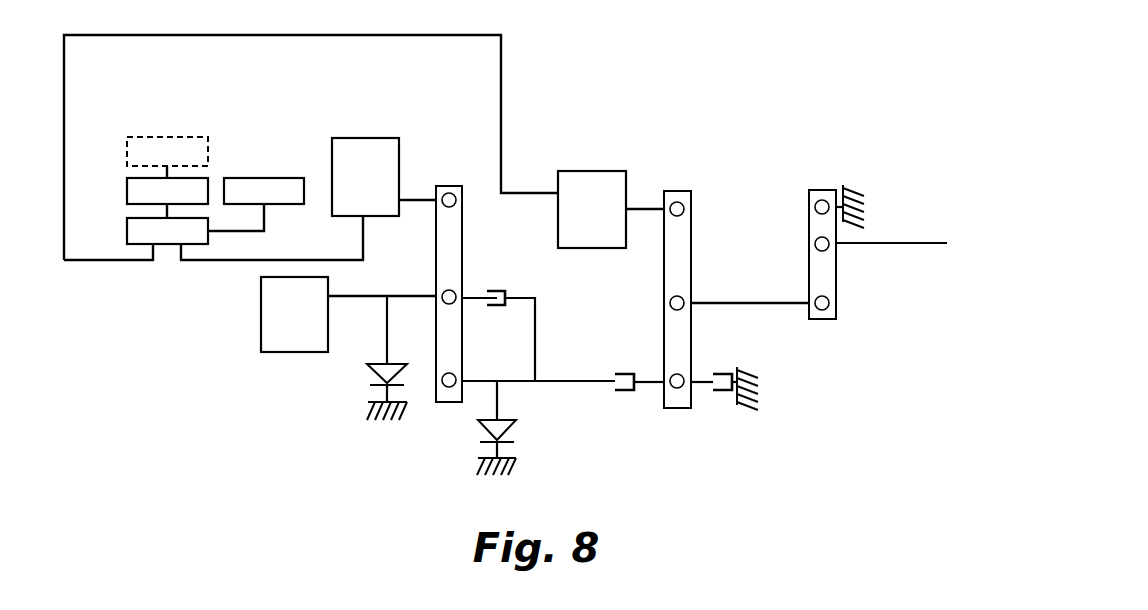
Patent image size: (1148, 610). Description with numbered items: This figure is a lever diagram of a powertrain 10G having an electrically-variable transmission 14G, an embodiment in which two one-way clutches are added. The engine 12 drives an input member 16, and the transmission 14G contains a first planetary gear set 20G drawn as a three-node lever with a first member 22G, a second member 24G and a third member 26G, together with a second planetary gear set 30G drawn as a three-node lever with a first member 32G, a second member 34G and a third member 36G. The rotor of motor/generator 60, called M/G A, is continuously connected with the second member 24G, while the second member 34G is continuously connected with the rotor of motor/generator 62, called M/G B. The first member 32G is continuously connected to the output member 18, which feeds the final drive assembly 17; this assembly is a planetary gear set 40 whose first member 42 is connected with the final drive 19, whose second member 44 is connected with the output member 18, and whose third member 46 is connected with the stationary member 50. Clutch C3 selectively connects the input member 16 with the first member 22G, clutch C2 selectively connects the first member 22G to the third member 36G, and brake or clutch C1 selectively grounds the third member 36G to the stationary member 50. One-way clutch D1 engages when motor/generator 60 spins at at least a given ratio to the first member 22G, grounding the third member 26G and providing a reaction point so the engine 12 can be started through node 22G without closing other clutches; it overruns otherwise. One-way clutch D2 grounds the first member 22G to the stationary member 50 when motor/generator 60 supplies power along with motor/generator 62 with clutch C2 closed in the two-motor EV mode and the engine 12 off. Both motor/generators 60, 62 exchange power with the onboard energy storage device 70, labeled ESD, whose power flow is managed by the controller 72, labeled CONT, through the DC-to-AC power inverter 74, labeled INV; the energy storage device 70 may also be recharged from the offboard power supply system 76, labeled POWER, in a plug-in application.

The powertrain 10G is at (895, 199).
The engine 12 is at (294, 314).
The transmission 14G is at (305, 118).
The input member 16 is at (345, 297).
The final drive assembly 17 is at (788, 204).
The output member 18 is at (757, 304).
The final drive 19 is at (915, 244).
The first planetary gear set 20G is at (462, 220).
The first member 22G is at (442, 297).
The second member 24G is at (449, 193).
The third member 26G is at (449, 387).
The second planetary gear set 30G is at (691, 223).
The first member 32G is at (684, 300).
The second member 34G is at (677, 201).
The third member 36G is at (677, 388).
The planetary gear set 40 is at (809, 228).
The first member 42 is at (829, 246).
The second member 44 is at (829, 305).
The third member 46 is at (822, 199).
The stationary member 50 is at (370, 405).
The motor/generator 60 is at (363, 138).
The motor/generator 62 is at (589, 171).
The energy storage device 70 is at (127, 190).
The controller 72 is at (264, 178).
The power inverter 74 is at (127, 230).
The offboard power supply system 76 is at (166, 136).
The brake or clutch C1 is at (727, 362).
The clutch C2 is at (621, 362).
The clutch C3 is at (515, 287).
The one-way clutch D1 is at (519, 432).
The one-way clutch D2 is at (366, 373).